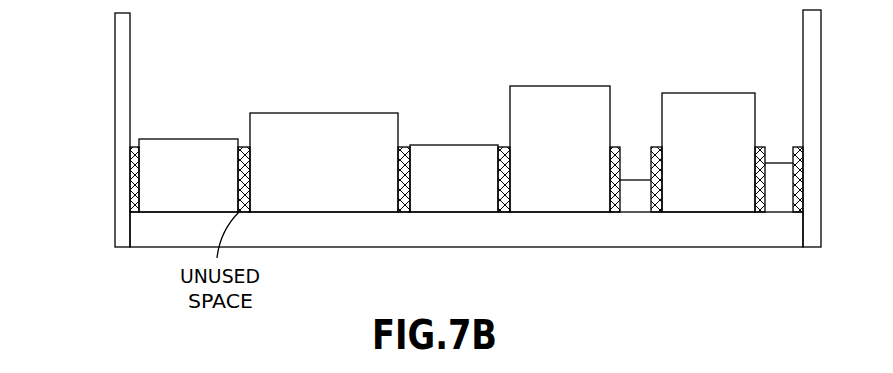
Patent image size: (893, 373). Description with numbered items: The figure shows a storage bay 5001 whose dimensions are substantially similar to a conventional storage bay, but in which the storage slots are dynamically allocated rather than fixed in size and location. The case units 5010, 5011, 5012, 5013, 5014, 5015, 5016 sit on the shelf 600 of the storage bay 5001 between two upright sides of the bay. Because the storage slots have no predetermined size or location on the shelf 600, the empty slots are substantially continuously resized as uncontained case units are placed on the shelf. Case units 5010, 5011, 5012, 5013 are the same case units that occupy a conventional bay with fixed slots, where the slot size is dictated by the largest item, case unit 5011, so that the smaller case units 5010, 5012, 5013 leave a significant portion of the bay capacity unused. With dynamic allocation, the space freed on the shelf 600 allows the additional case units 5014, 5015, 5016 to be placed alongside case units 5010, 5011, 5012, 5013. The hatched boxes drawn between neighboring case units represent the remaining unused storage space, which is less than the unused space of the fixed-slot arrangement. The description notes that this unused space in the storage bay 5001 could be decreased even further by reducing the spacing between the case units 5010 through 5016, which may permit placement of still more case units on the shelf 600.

The storage bay 5001 is at (80, 297).
The shelf 600 is at (666, 232).
The case unit 5010 is at (218, 187).
The case unit 5011 is at (352, 186).
The case unit 5012 is at (482, 185).
The case unit 5013 is at (585, 185).
The case unit 5014 is at (640, 205).
The case unit 5015 is at (737, 186).
The case unit 5016 is at (773, 202).